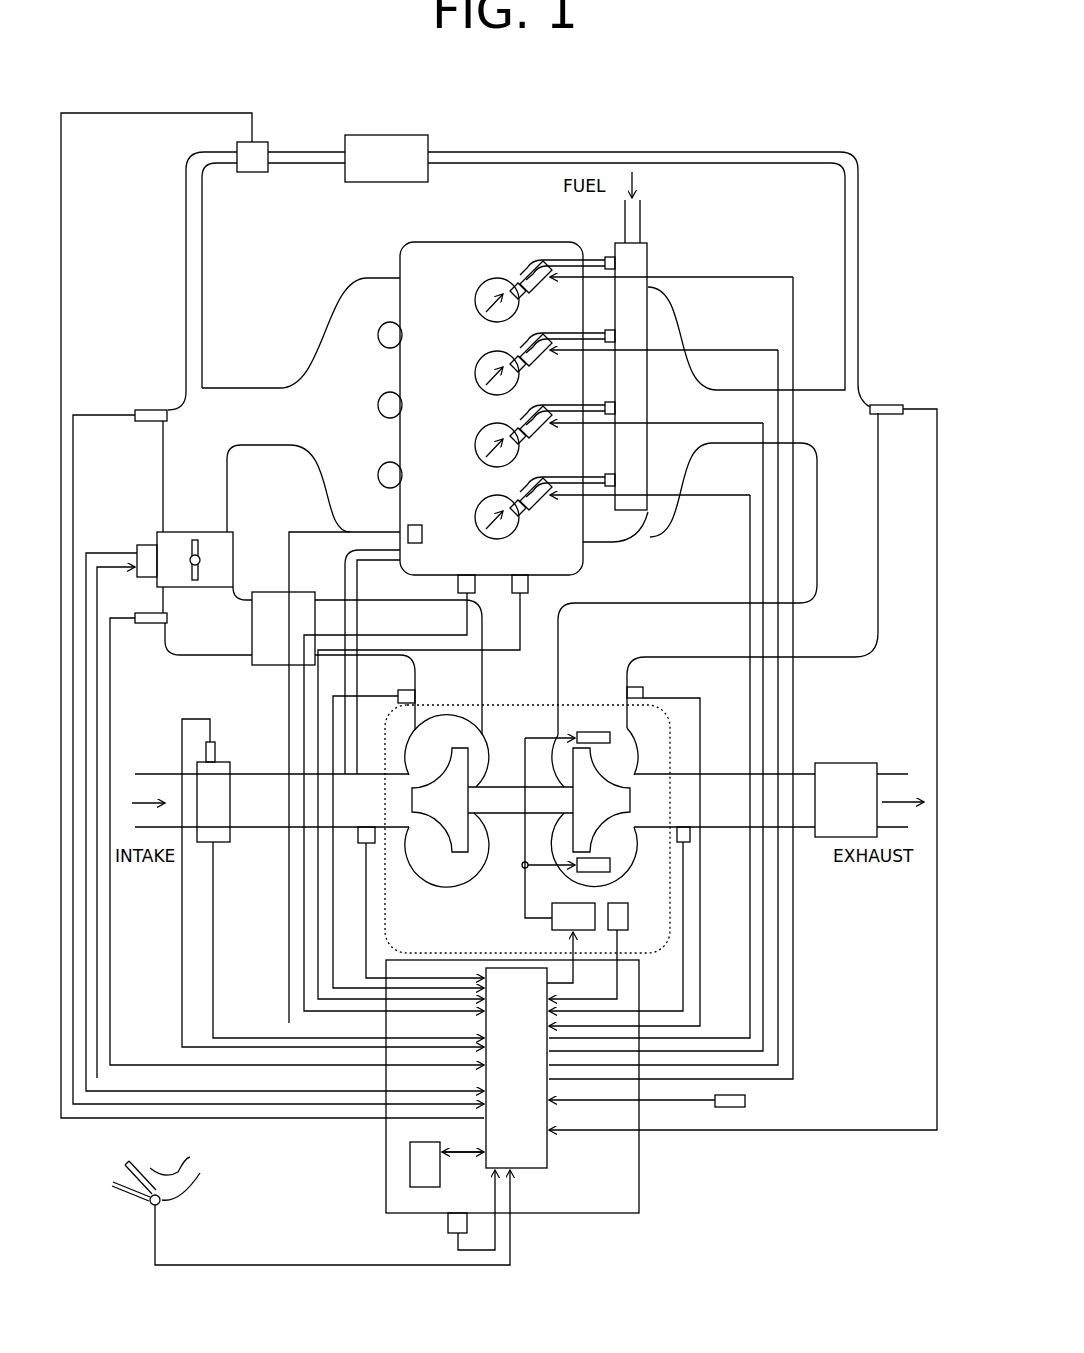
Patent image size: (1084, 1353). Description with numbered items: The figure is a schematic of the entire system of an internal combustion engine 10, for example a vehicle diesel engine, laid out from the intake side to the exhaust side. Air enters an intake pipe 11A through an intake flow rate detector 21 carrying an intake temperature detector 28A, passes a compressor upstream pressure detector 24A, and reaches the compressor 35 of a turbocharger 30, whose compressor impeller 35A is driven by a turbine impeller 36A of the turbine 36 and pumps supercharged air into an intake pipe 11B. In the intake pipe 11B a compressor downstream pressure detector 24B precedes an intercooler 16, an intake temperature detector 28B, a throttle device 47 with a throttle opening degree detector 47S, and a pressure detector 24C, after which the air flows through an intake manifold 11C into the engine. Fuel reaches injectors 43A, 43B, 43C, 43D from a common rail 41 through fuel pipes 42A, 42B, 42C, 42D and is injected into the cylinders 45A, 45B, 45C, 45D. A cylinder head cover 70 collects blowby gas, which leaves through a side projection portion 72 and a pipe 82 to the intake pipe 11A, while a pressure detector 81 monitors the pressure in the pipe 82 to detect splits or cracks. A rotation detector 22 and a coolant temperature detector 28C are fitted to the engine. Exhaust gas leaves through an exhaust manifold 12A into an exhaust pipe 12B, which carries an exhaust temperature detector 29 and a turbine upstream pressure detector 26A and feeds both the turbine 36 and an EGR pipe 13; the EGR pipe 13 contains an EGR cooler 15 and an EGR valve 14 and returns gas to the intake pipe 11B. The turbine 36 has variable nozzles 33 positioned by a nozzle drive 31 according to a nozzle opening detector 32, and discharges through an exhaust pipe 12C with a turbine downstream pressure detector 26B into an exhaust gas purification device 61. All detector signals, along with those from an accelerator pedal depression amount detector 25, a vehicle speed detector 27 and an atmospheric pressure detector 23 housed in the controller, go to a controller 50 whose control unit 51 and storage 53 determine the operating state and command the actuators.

The internal combustion engine 10 is at (398, 262).
The intake pipe 11A is at (252, 772).
The intake pipe 11B is at (160, 502).
The intake manifold 11C is at (318, 330).
The exhaust manifold 12A is at (682, 333).
The exhaust pipe 12B is at (880, 484).
The exhaust pipe 12C is at (798, 770).
The EGR pipe 13 is at (183, 268).
The EGR valve 14 is at (252, 174).
The EGR cooler 15 is at (345, 184).
The intercooler 16 is at (265, 590).
The intake flow rate detector 21 is at (232, 843).
The rotation detector 22 is at (455, 585).
The atmospheric pressure detector 23 is at (445, 1222).
The compressor upstream pressure detector 24A is at (364, 827).
The compressor downstream pressure detector 24B is at (404, 686).
The pressure detector 24C is at (150, 403).
The accelerator pedal depression amount detector 25 is at (150, 1210).
The turbine upstream pressure detector 26A is at (637, 685).
The turbine downstream pressure detector 26B is at (692, 842).
The vehicle speed detector 27 is at (748, 1100).
The intake temperature detector 28A is at (212, 742).
The intake temperature detector 28B is at (150, 626).
The coolant temperature detector 28C is at (532, 585).
The exhaust temperature detector 29 is at (884, 402).
The turbocharger 30 is at (500, 705).
The nozzle drive 31 is at (550, 923).
The nozzle opening detector 32 is at (632, 918).
The variable nozzles 33 is at (615, 738).
The compressor 35 is at (422, 885).
The compressor impeller 35A is at (442, 828).
The turbine 36 is at (642, 755).
The turbine impeller 36A is at (632, 800).
The common rail 41 is at (652, 262).
The fuel pipe 42A is at (555, 255).
The fuel pipe 42B is at (551, 328).
The fuel pipe 42C is at (551, 401).
The fuel pipe 42D is at (551, 473).
The injector 43A is at (477, 306).
The injector 43B is at (478, 379).
The injector 43C is at (477, 451).
The injector 43D is at (477, 526).
The cylinder 45A is at (490, 323).
The cylinder 45B is at (490, 396).
The cylinder 45C is at (490, 470).
The cylinder 45D is at (490, 540).
The throttle device 47 is at (240, 560).
The throttle opening degree detector 47S is at (132, 545).
The controller 50 is at (384, 1165).
The control unit 51 is at (525, 1172).
The storage 53 is at (408, 1165).
The exhaust gas purification device 61 is at (848, 762).
The cylinder head cover 70 is at (490, 240).
The side projection portion 72 is at (406, 532).
The pressure detector 81 is at (398, 522).
The pipe 82 is at (345, 562).